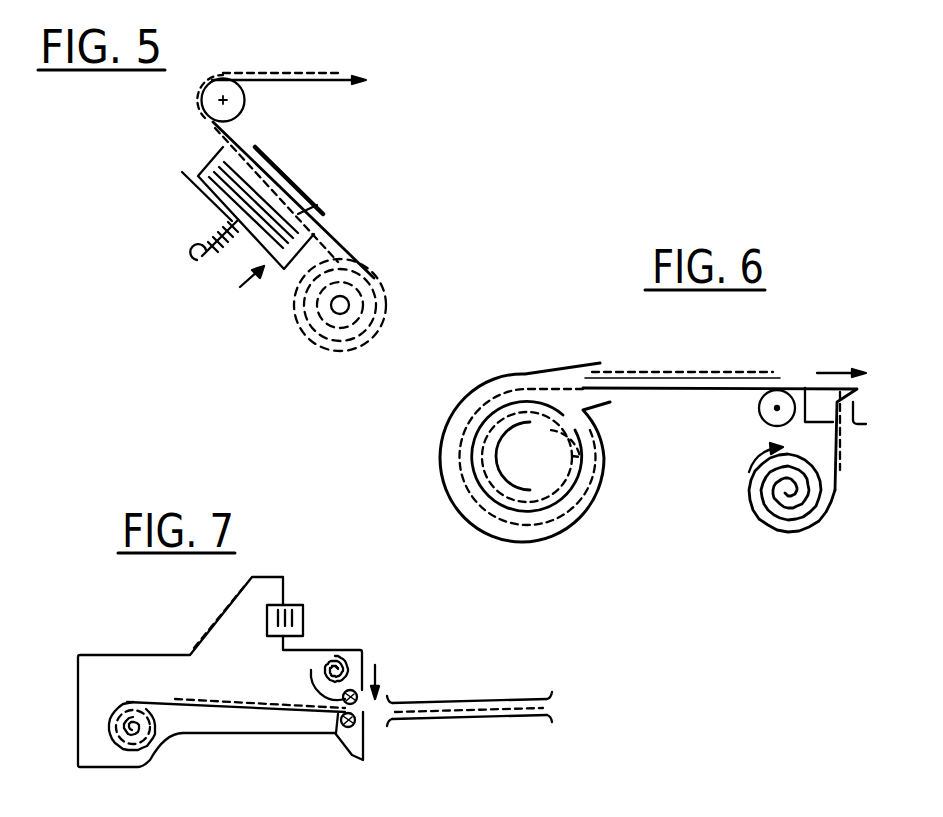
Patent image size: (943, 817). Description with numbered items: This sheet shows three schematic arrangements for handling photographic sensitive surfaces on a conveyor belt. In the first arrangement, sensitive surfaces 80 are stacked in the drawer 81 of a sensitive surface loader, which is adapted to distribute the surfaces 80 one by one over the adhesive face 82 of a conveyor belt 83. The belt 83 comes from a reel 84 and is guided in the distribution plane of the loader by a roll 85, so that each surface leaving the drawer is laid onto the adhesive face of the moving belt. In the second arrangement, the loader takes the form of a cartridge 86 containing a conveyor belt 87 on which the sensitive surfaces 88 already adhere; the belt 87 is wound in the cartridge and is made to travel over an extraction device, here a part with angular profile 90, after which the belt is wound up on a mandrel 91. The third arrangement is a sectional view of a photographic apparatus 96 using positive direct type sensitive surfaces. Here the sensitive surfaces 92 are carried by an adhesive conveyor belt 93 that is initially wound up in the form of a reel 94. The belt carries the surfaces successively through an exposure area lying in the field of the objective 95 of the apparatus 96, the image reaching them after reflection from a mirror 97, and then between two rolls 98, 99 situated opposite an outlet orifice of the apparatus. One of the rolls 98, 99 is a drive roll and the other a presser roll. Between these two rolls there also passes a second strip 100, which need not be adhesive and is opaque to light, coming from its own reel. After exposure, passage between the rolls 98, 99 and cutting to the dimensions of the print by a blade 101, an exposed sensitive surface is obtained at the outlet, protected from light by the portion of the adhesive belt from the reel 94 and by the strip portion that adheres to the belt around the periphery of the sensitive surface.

In FIG. 5, the sensitive surfaces 80 is at (317, 205).
In FIG. 5, the drawer 81 is at (212, 160).
In FIG. 5, the adhesive face 82 is at (203, 120).
In FIG. 5, the conveyor belt 83 is at (358, 263).
In FIG. 5, the reel 84 is at (333, 328).
In FIG. 5, the roll 85 is at (245, 105).
In FIG. 6, the cartridge 86 is at (440, 468).
In FIG. 6, the conveyor belt 87 is at (613, 388).
In FIG. 6, the sensitive surfaces 88 is at (583, 462).
In FIG. 6, the part with angular profile 90 is at (826, 419).
In FIG. 6, the mandrel 91 is at (788, 488).
In FIG. 7, the sensitive surfaces 92 is at (185, 703).
In FIG. 7, the adhesive conveyor belt 93 is at (300, 712).
In FIG. 7, the reel 94 is at (110, 717).
In FIG. 7, the objective 95 is at (305, 617).
In FIG. 7, the apparatus 96 is at (230, 733).
In FIG. 7, the mirror 97 is at (213, 620).
In FIG. 7, the roll 98 is at (348, 727).
In FIG. 7, the roll 99 is at (352, 648).
In FIG. 7, the second strip 100 is at (322, 675).
In FIG. 7, the blade 101 is at (377, 652).